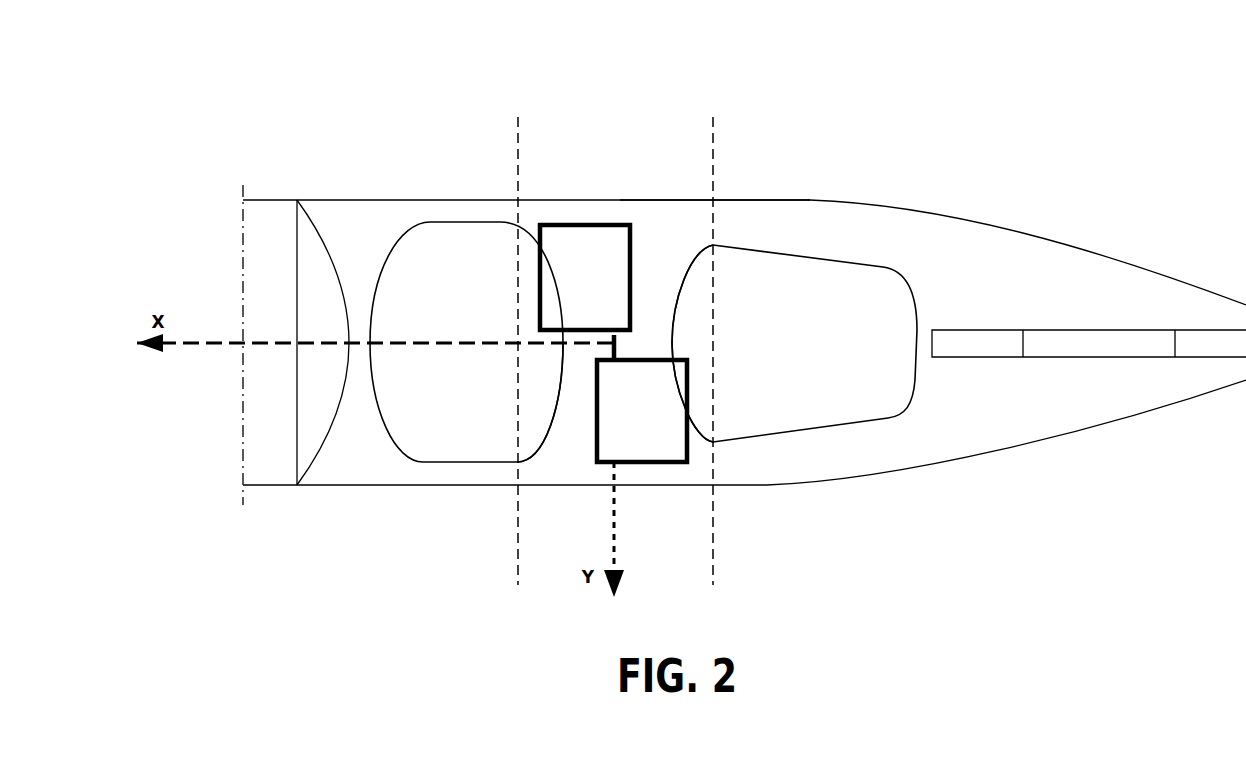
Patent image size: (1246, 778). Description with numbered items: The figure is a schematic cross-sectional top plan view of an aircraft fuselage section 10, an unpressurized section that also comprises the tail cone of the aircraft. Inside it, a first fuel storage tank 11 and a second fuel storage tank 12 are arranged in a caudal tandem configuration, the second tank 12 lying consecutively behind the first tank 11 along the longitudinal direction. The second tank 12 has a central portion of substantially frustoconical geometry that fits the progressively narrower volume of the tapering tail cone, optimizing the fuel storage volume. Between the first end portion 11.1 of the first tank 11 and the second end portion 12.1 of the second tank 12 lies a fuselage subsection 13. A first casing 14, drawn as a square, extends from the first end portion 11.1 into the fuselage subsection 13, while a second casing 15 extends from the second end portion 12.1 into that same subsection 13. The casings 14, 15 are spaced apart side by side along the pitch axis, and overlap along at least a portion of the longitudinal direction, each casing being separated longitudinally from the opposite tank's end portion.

The aircraft fuselage section 10 is at (312, 183).
The first fuel storage tank 11 is at (462, 258).
The first end portion of the first tank 11.1 is at (534, 404).
The second fuel storage tank 12 is at (817, 280).
The second end portion of the second tank 12.1 is at (692, 298).
The fuselage subsection 13 is at (658, 145).
The first casing 14 is at (586, 225).
The second casing 15 is at (650, 463).